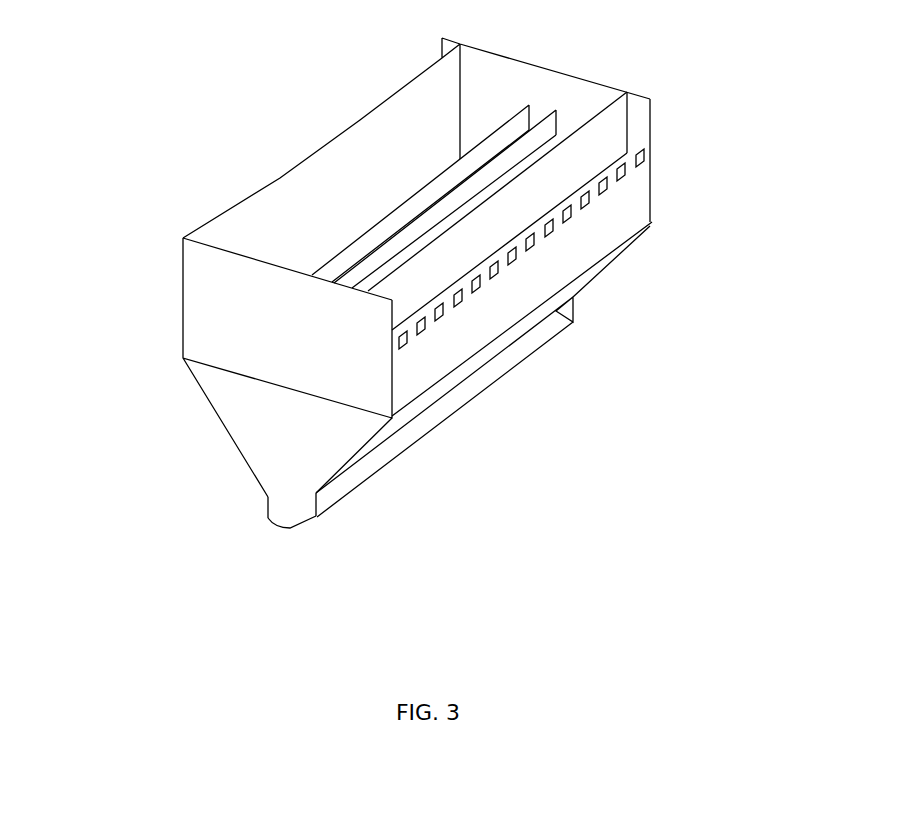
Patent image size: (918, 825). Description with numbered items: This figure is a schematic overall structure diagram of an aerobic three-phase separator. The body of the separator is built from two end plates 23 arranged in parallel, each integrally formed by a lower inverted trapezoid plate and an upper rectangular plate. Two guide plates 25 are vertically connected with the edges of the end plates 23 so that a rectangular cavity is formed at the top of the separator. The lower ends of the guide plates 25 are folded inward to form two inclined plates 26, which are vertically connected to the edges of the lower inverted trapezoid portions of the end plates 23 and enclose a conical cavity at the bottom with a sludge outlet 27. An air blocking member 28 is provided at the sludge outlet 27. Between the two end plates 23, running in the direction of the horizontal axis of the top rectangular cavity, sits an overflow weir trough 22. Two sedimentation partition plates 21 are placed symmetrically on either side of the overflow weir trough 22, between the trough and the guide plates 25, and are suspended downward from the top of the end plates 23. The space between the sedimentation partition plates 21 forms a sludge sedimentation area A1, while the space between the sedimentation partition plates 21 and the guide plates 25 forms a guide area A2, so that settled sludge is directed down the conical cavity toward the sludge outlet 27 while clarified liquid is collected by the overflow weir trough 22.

The sedimentation partition plate 21 is at (270, 187).
The overflow weir trough 22 is at (540, 107).
The sludge sedimentation area A1 is at (290, 238).
The guide area A2 is at (593, 152).
The end plate 23 is at (263, 325).
The guide plate 25 is at (637, 205).
The inclined plate 26 is at (550, 312).
The sludge outlet 27 is at (295, 500).
The air blocking member 28 is at (295, 527).